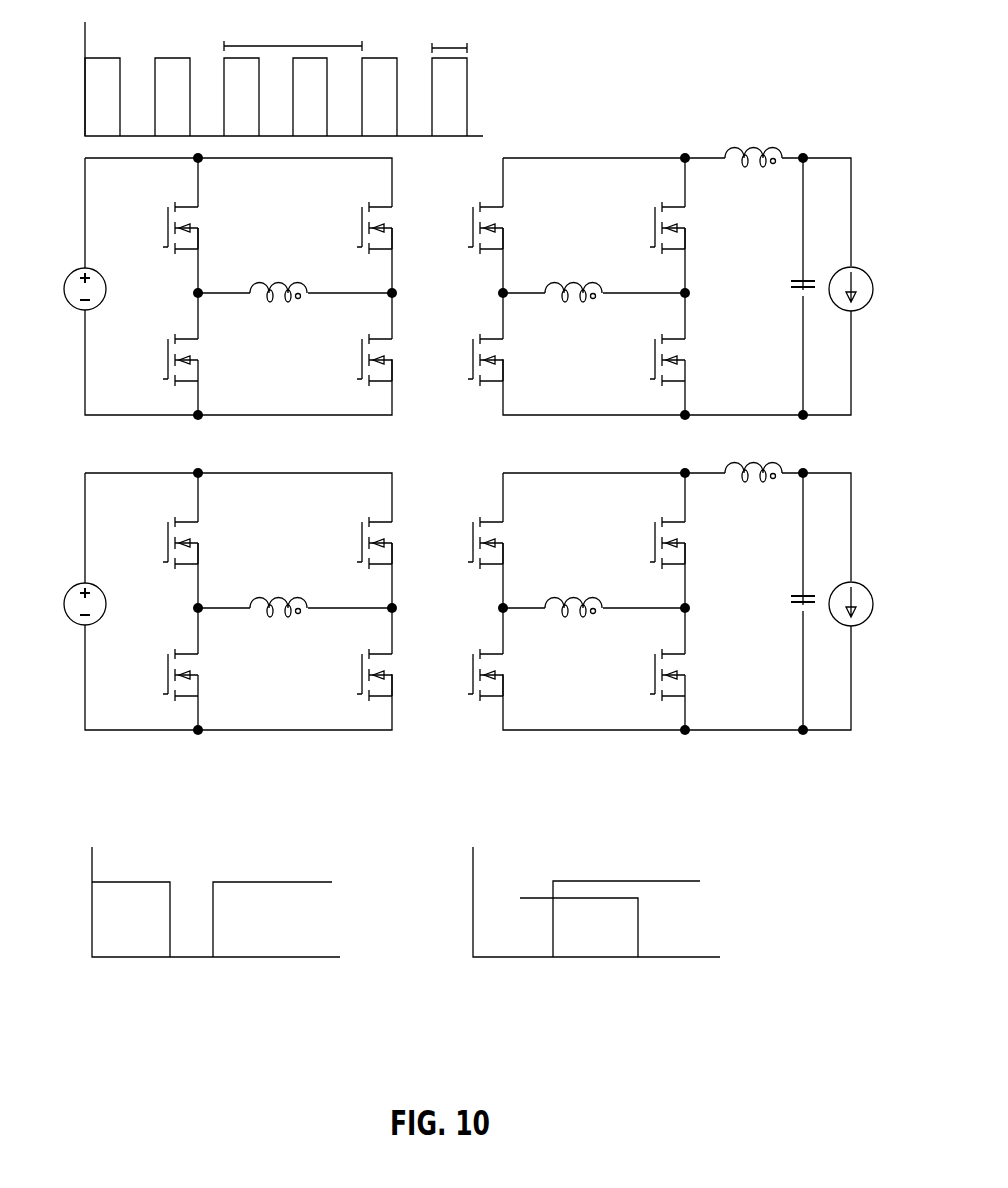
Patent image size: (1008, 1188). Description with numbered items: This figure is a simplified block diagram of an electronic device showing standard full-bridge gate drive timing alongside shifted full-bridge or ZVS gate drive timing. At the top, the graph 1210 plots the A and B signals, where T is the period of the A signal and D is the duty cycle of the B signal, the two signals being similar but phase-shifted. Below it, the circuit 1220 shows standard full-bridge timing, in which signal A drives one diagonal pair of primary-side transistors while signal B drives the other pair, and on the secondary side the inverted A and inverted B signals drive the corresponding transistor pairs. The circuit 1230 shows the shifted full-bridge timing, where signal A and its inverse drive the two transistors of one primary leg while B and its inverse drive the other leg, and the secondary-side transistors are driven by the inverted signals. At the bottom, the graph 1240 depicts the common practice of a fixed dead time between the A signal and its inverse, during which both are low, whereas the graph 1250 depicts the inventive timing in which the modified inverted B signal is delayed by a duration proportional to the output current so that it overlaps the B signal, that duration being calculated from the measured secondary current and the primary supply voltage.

The graph 1210 is at (497, 95).
The circuit 1220 is at (765, 115).
The circuit 1230 is at (770, 757).
The graph 1240 is at (335, 870).
The graph 1250 is at (748, 944).